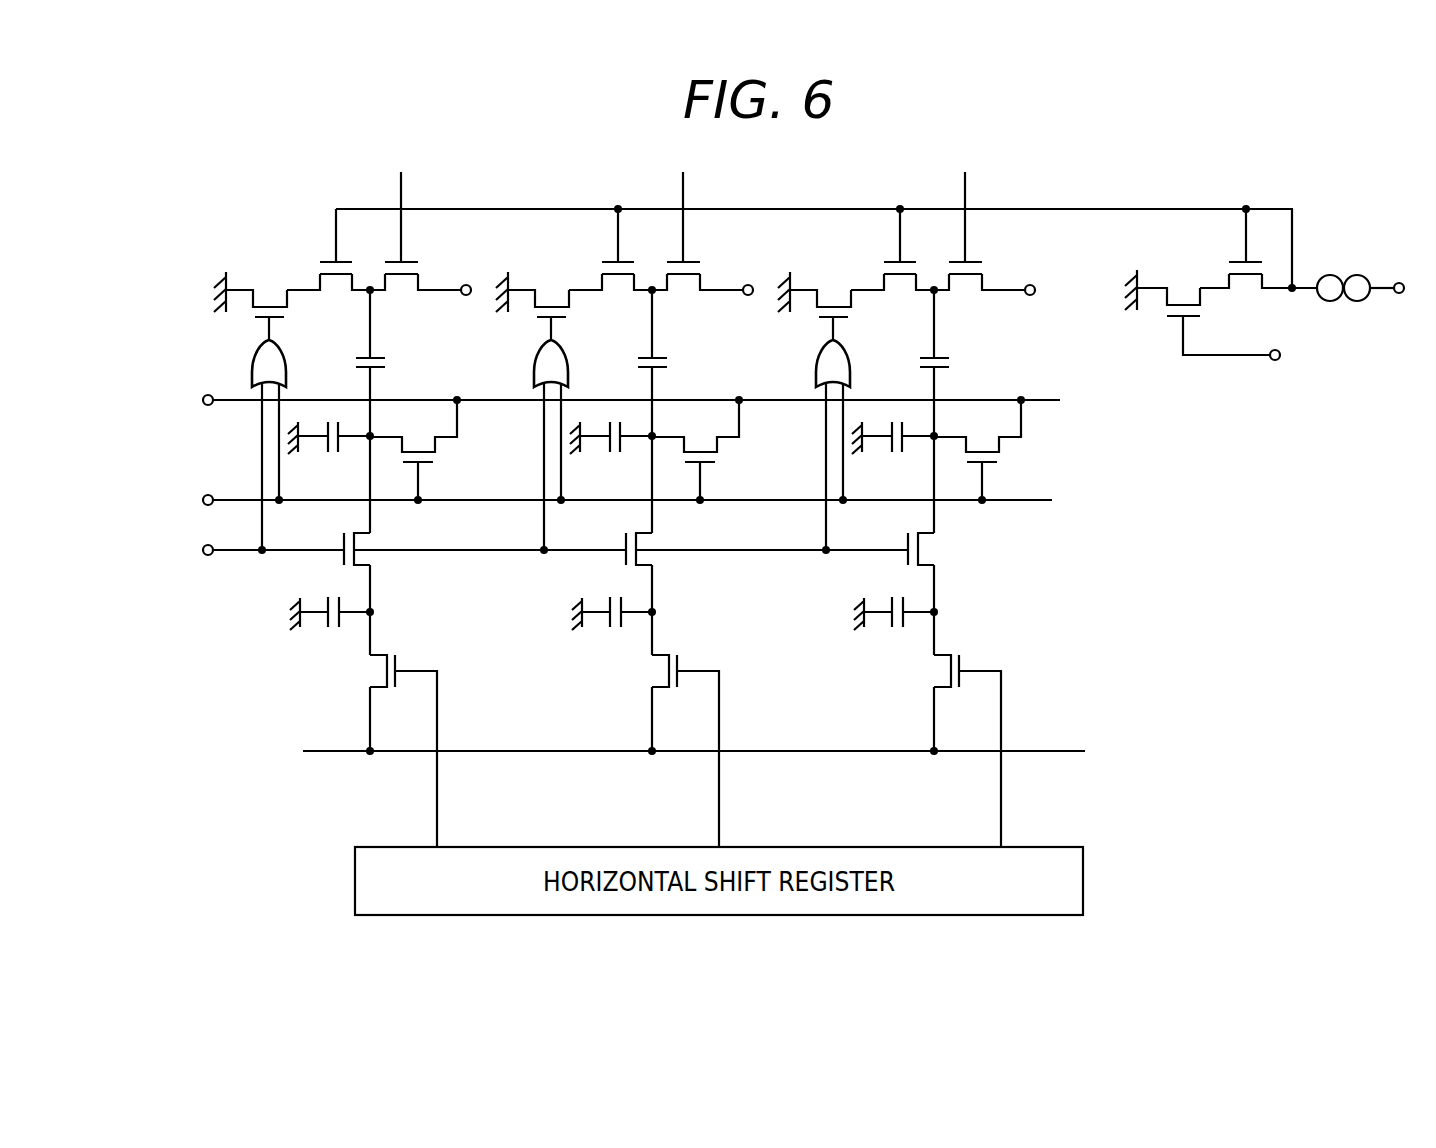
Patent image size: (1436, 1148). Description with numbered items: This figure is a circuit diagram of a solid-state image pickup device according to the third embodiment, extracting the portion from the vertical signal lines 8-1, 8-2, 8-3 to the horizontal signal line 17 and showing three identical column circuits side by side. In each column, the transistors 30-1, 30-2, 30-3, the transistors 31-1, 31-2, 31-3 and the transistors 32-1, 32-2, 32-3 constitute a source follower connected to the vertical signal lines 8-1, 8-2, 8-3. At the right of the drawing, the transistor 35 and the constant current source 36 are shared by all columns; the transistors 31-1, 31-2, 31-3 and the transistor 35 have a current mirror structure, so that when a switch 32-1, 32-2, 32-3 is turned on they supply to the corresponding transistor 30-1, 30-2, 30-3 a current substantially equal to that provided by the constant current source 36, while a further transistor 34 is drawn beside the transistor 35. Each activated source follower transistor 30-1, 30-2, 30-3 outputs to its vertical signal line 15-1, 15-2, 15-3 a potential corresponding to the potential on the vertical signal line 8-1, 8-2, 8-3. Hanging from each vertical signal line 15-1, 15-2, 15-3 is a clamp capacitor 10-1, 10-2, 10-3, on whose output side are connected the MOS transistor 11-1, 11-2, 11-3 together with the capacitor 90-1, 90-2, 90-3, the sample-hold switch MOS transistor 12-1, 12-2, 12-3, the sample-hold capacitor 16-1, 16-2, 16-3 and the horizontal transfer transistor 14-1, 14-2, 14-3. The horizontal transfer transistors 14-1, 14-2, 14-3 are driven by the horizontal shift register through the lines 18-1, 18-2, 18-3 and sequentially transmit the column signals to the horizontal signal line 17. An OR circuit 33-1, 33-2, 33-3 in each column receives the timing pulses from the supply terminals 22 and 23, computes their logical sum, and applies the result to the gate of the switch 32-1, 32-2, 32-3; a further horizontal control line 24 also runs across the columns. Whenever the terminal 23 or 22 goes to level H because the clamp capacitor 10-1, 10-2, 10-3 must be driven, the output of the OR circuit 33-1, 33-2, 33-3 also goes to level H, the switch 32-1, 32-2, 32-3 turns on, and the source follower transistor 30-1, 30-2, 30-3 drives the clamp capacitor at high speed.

The vertical signal line 8-1 is at (401, 189).
The vertical signal line 8-2 is at (683, 189).
The vertical signal line 8-3 is at (965, 189).
The clamp capacitor 10-1 is at (386, 368).
The clamp capacitor 10-2 is at (668, 368).
The clamp capacitor 10-3 is at (950, 368).
The MOS transistor 11-1 is at (436, 453).
The MOS transistor 11-2 is at (718, 453).
The MOS transistor 11-3 is at (1000, 453).
The sample-hold switch MOS transistor 12-1 is at (368, 546).
The sample-hold switch MOS transistor 12-2 is at (650, 546).
The sample-hold switch MOS transistor 12-3 is at (932, 546).
The horizontal transfer transistor 14-1 is at (400, 655).
The horizontal transfer transistor 14-2 is at (682, 655).
The horizontal transfer transistor 14-3 is at (964, 655).
The vertical signal line 15-1 is at (373, 347).
The vertical signal line 15-2 is at (655, 347).
The vertical signal line 15-3 is at (937, 347).
The sample-hold capacitor 16-1 is at (325, 627).
The sample-hold capacitor 16-2 is at (607, 627).
The sample-hold capacitor 16-3 is at (889, 627).
The horizontal signal line 17 is at (1044, 748).
The horizontal scanning line 18-1 is at (437, 810).
The horizontal scanning line 18-2 is at (719, 810).
The horizontal scanning line 18-3 is at (1001, 810).
The supply terminal 22 is at (203, 554).
The supply terminal 23 is at (203, 504).
The control line 24 is at (203, 404).
The source follower transistor 30-1 is at (402, 282).
The source follower transistor 30-2 is at (684, 282).
The source follower transistor 30-3 is at (966, 282).
The transistor 31-1 is at (333, 282).
The transistor 31-2 is at (615, 282).
The transistor 31-3 is at (897, 282).
The switch transistor 32-1 is at (268, 305).
The switch transistor 32-2 is at (550, 305).
The switch transistor 32-3 is at (832, 305).
The OR circuit 33-1 is at (252, 363).
The OR circuit 33-2 is at (534, 363).
The OR circuit 33-3 is at (816, 363).
The transistor 34 is at (1182, 300).
The transistor 35 is at (1245, 283).
The constant current source 36 is at (1346, 289).
The capacitor 90-1 is at (323, 452).
The capacitor 90-2 is at (605, 452).
The capacitor 90-3 is at (887, 452).